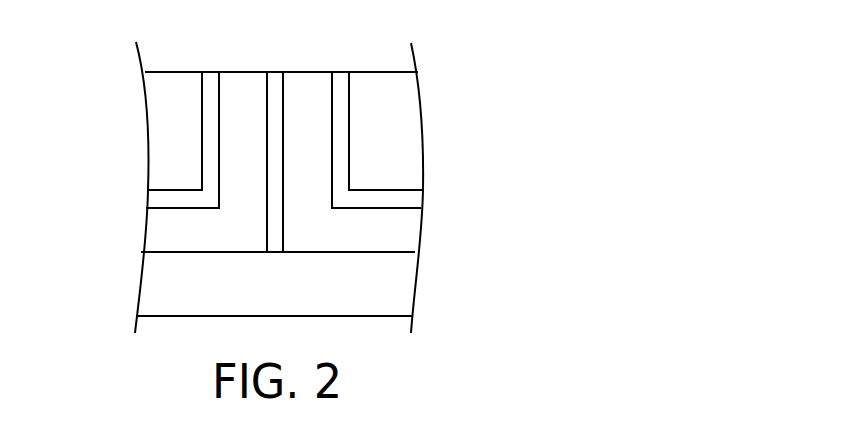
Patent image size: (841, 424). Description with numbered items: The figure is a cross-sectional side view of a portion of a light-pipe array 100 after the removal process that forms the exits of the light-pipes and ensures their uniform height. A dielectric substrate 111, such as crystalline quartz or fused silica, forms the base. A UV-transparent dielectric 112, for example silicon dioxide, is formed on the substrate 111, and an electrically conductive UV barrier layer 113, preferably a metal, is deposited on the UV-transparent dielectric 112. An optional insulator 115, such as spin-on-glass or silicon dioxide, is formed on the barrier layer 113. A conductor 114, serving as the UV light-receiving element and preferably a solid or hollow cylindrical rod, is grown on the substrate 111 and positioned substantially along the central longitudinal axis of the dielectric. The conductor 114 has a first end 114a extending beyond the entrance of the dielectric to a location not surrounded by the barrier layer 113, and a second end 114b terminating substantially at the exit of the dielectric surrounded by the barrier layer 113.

The light-pipe array 100 is at (502, 38).
The dielectric substrate 111 is at (175, 290).
The UV-transparent dielectric 112 is at (191, 236).
The UV barrier layer 113 is at (210, 170).
The conductor 114 is at (275, 115).
The first end 114a is at (278, 252).
The second end 114b is at (277, 72).
The insulator 115 is at (385, 161).